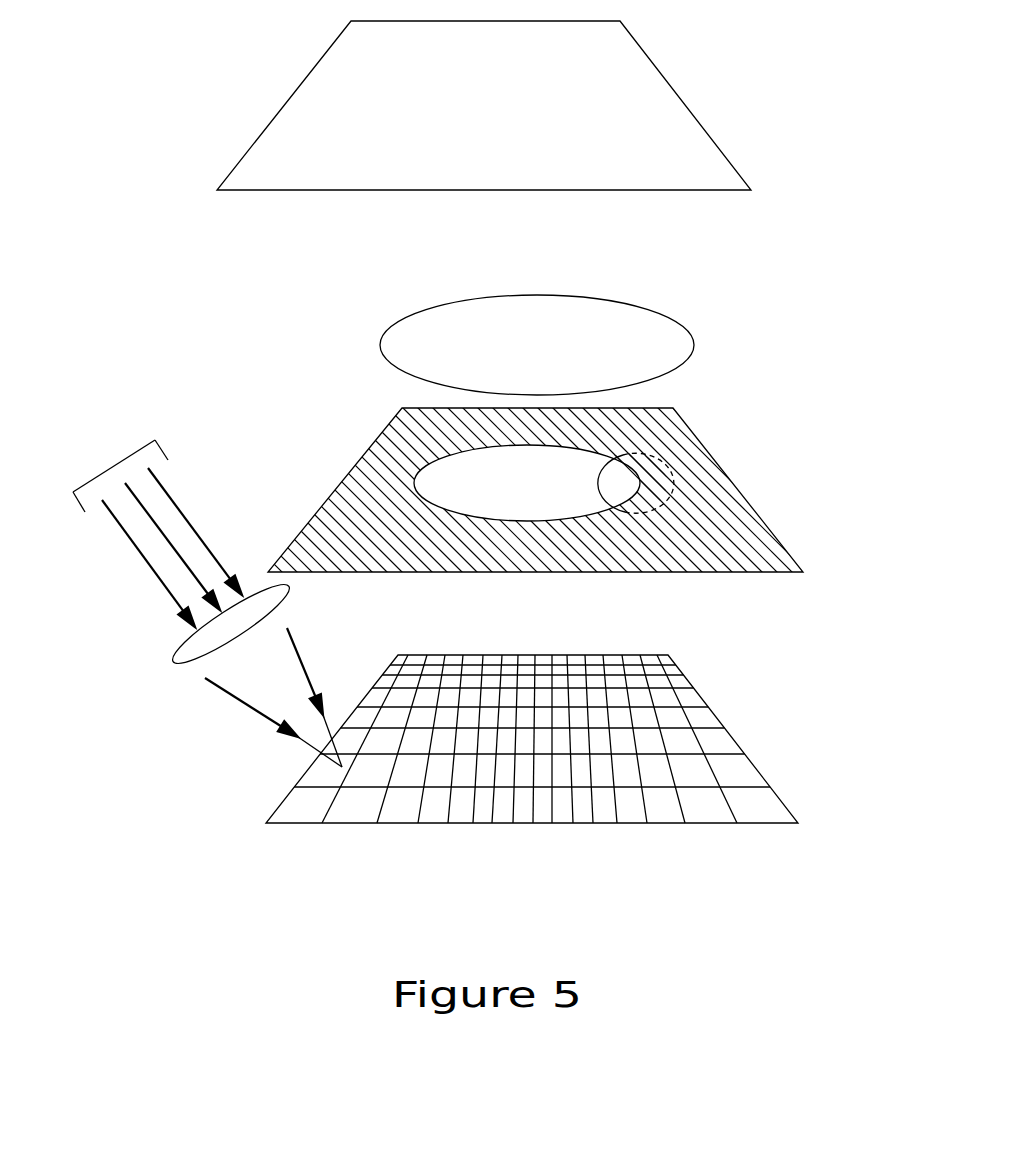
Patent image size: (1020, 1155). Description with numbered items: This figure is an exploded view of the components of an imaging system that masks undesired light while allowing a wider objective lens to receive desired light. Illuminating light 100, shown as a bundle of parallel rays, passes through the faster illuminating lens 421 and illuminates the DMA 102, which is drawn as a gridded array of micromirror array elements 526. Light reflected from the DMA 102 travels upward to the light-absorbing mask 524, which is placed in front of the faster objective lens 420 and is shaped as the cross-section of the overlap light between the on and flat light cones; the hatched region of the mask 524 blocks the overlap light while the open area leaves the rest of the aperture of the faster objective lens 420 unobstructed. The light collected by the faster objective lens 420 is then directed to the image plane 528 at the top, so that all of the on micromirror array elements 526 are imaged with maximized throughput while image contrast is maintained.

The image plane 528 is at (653, 110).
The faster objective lens 420 is at (582, 353).
The light-absorbing mask 524 is at (643, 513).
The micromirror array elements 526 is at (660, 745).
The DMA 102 is at (800, 845).
The illuminating light 100 is at (107, 472).
The faster illuminating lens 421 is at (188, 655).